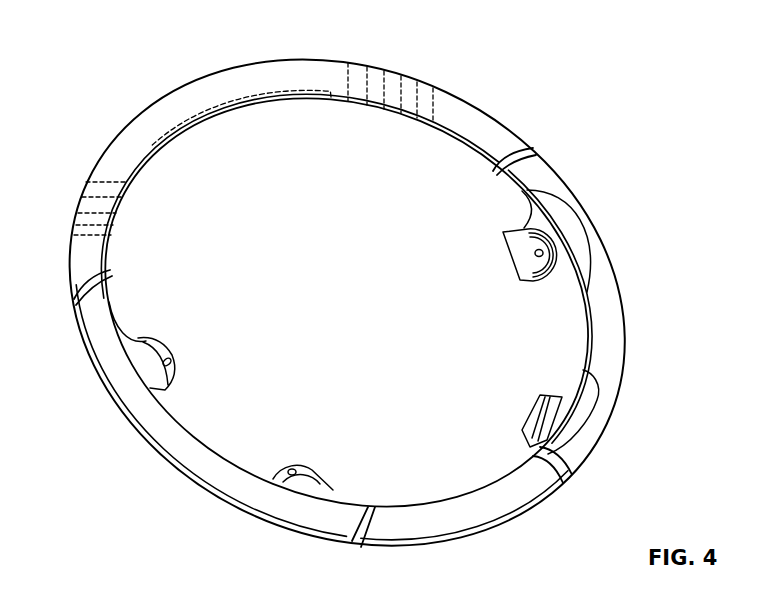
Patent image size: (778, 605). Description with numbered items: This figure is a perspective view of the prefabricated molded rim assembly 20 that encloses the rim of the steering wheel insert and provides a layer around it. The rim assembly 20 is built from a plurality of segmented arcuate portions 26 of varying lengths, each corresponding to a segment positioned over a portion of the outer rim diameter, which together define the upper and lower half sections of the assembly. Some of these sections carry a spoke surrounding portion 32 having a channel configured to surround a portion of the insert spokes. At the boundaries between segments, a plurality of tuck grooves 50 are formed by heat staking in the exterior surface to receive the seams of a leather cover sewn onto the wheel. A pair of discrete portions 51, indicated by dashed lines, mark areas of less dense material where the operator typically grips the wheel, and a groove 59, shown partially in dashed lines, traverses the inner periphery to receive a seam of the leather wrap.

The rim assembly 20 is at (183, 36).
The segmented arcuate portions 26 is at (165, 115).
The spoke surrounding portion 32 is at (160, 352).
The tuck grooves 50 is at (512, 150).
The discrete portions 51 is at (102, 192).
The groove 59 is at (293, 91).